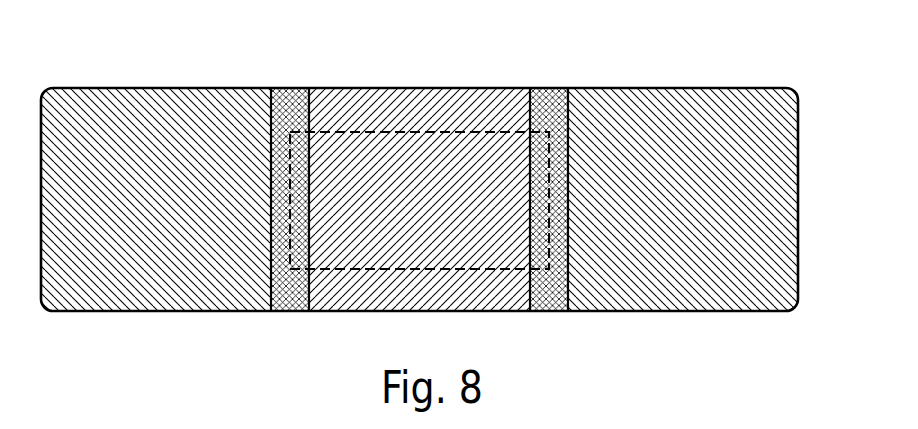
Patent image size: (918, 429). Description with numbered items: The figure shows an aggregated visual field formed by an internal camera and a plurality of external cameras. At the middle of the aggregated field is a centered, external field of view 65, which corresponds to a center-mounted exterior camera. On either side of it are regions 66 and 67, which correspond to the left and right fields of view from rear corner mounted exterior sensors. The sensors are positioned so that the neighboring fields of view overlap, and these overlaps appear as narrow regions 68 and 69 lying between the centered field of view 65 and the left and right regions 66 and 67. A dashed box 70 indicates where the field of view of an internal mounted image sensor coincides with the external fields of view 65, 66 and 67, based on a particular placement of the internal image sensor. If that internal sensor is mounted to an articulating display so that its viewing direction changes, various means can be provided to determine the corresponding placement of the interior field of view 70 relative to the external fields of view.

The centered external field of view 65 is at (400, 108).
The left field of view region 66 is at (148, 108).
The right field of view region 67 is at (680, 105).
The overlap region 68 is at (289, 102).
The overlap region 69 is at (553, 103).
The dashed box 70 is at (341, 270).